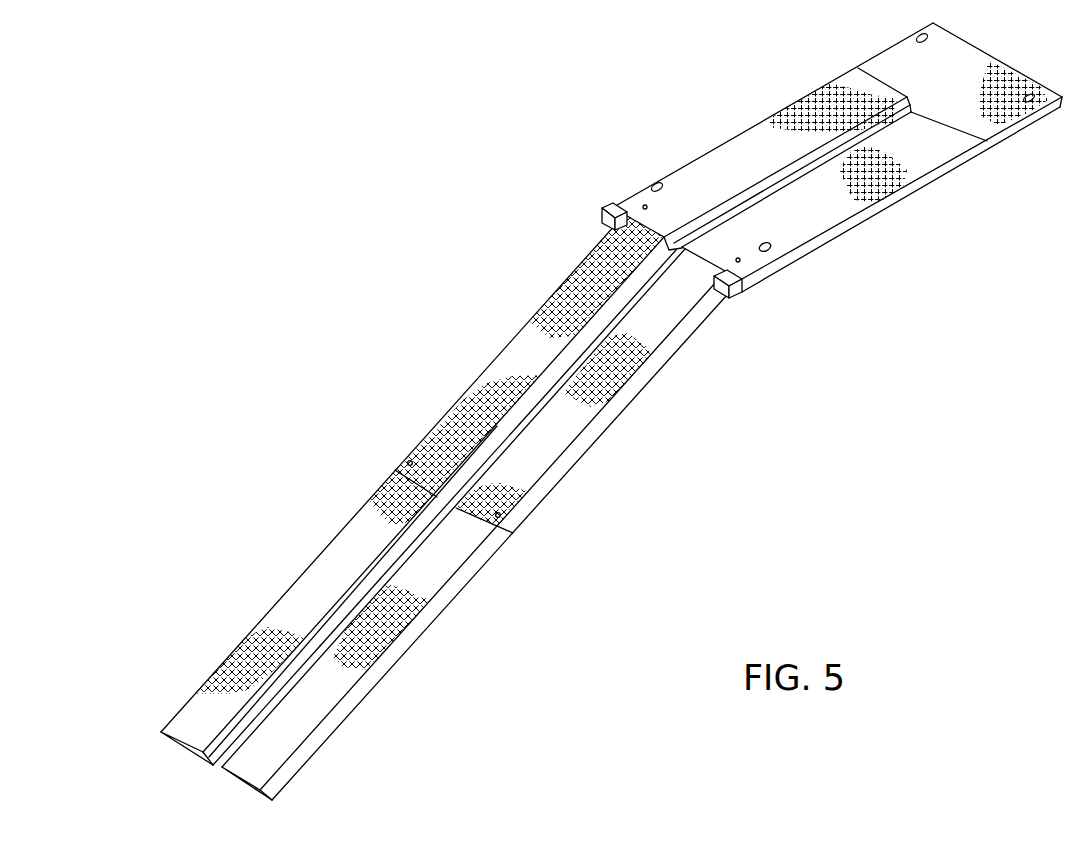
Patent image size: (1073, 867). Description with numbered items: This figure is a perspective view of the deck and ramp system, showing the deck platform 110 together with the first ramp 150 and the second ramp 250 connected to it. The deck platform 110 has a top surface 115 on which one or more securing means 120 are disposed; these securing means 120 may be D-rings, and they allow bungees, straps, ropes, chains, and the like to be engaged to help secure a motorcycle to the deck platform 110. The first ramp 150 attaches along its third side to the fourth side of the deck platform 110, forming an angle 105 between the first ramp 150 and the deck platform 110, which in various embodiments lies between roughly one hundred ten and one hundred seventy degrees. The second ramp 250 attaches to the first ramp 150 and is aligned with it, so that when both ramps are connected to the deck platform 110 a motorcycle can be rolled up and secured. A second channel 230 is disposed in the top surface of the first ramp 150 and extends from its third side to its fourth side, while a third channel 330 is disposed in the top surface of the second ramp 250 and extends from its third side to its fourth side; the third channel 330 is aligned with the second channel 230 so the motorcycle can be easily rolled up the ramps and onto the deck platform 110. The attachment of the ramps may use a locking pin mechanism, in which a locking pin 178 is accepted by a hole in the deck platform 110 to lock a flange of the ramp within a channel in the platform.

The angle 105 is at (780, 273).
The deck platform 110 is at (778, 110).
The top surface 115 is at (947, 137).
The securing means 120 is at (657, 180).
The first ramp 150 is at (537, 318).
The locking pin 178 is at (647, 207).
The second channel 230 is at (547, 393).
The second ramp 250 is at (400, 643).
The third channel 330 is at (350, 616).